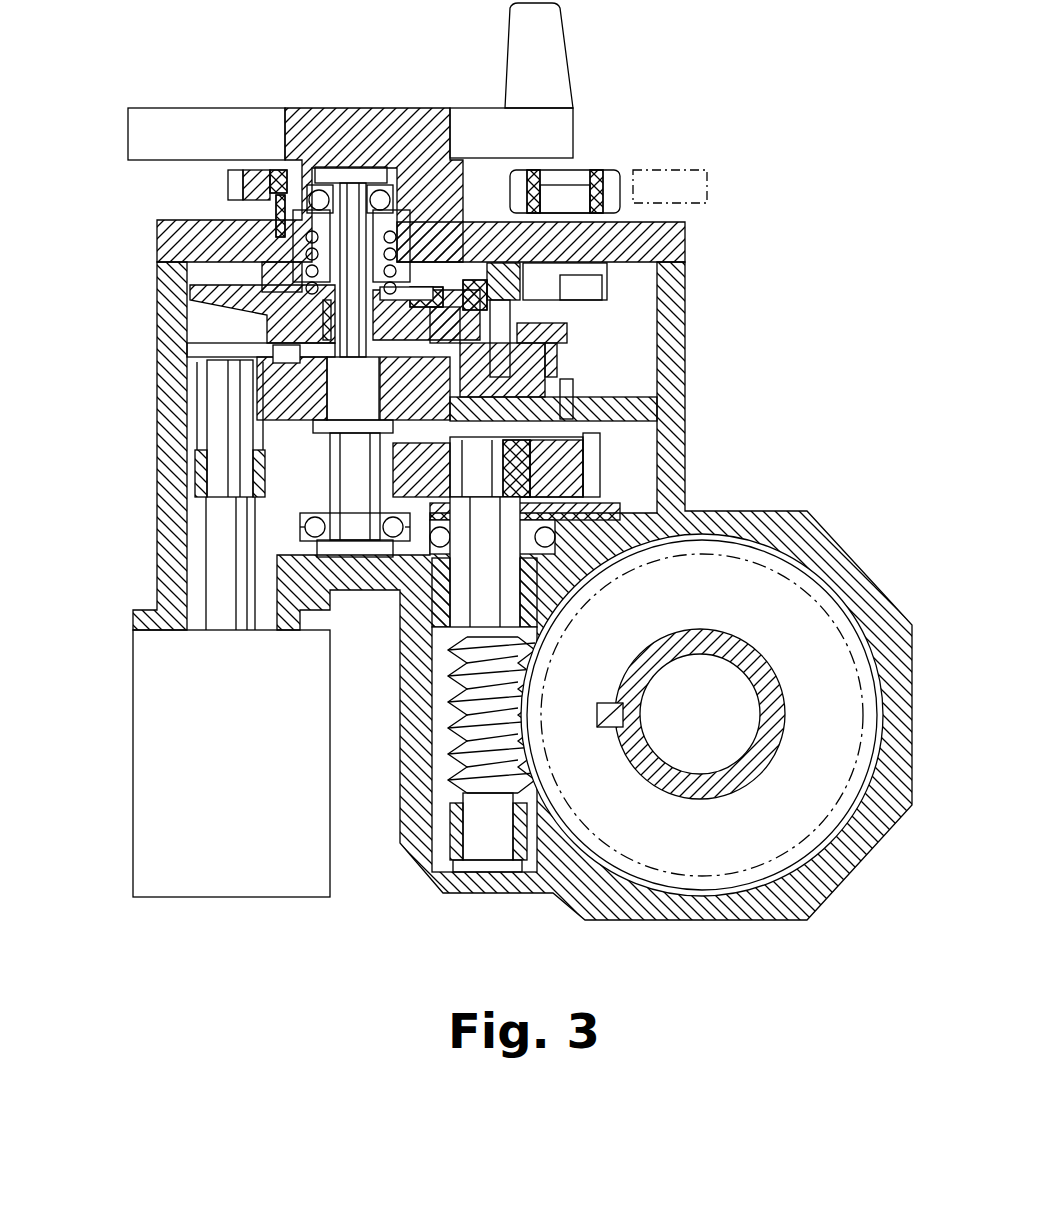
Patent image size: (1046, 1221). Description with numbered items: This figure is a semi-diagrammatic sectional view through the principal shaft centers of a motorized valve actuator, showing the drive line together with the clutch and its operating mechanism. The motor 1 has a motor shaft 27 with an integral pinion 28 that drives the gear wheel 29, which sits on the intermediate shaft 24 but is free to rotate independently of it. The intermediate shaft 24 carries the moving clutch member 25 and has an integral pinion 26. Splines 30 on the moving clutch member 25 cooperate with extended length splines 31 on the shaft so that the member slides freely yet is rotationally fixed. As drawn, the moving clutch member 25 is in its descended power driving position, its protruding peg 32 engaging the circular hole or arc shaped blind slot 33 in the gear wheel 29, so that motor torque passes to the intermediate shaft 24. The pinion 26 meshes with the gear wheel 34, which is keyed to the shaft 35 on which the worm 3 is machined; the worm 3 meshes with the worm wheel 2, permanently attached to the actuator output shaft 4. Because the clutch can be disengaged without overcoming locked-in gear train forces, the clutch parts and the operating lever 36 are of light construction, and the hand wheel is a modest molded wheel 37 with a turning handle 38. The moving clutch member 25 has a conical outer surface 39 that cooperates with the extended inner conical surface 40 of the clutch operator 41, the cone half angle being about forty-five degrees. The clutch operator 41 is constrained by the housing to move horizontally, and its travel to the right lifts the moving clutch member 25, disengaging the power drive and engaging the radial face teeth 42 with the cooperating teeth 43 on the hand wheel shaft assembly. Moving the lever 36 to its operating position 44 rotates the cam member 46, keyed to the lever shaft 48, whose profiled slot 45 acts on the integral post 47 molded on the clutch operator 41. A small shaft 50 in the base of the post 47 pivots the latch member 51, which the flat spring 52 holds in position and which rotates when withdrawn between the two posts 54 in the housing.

The motor 1 is at (190, 762).
The worm wheel 2 is at (782, 827).
The worm 3 is at (450, 725).
The actuator output shaft 4 is at (642, 792).
The intermediate shaft 24 is at (342, 375).
The moving clutch member 25 is at (230, 283).
The pinion 26 is at (322, 487).
The motor shaft 27 is at (215, 597).
The pinion 28 is at (278, 427).
The gear wheel 29 is at (265, 372).
The splines 30 is at (215, 247).
The splines 31 is at (290, 278).
The peg 32 is at (283, 365).
The blind slot 33 is at (250, 408).
The gear wheel 34 is at (595, 462).
The shaft 35 is at (440, 580).
The operating lever 36 is at (640, 182).
The molded wheel 37 is at (525, 128).
The turning handle 38 is at (540, 74).
The conical outer surface 39 is at (250, 337).
The inner conical surface 40 is at (208, 303).
The clutch operator 41 is at (627, 313).
The radial face teeth 42 is at (445, 300).
The teeth 43 is at (440, 250).
The operating position 44 is at (640, 168).
The profiled slot 45 is at (545, 275).
The cam member 46 is at (580, 293).
The post 47 is at (572, 242).
The shaft 48 is at (567, 180).
The small shaft 50 is at (600, 343).
The latch member 51 is at (580, 395).
The flat spring 52 is at (567, 368).
The posts 54 is at (620, 397).